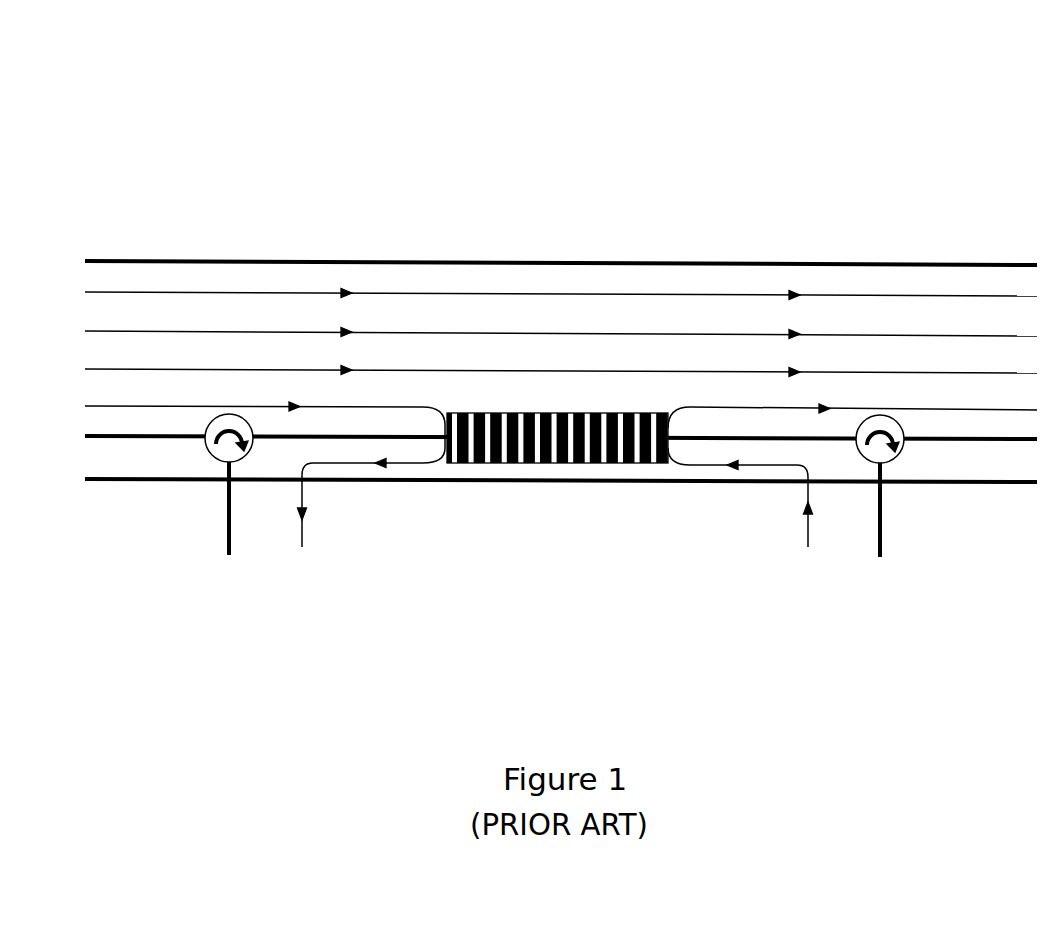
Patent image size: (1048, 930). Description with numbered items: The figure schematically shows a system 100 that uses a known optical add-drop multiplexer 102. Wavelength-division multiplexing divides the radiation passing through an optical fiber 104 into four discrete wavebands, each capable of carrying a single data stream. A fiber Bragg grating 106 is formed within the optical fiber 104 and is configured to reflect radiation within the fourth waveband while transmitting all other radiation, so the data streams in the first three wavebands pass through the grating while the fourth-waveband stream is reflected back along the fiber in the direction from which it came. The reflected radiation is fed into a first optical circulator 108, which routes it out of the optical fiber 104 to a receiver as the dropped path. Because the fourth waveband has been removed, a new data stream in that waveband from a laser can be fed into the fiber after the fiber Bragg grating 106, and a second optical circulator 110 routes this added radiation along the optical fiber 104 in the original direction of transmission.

The system 100 is at (128, 177).
The optical add-drop multiplexer 102 is at (127, 464).
The optical fiber 104 is at (923, 263).
The fiber Bragg grating 106 is at (620, 463).
The first optical circulator 108 is at (208, 452).
The second optical circulator 110 is at (898, 455).